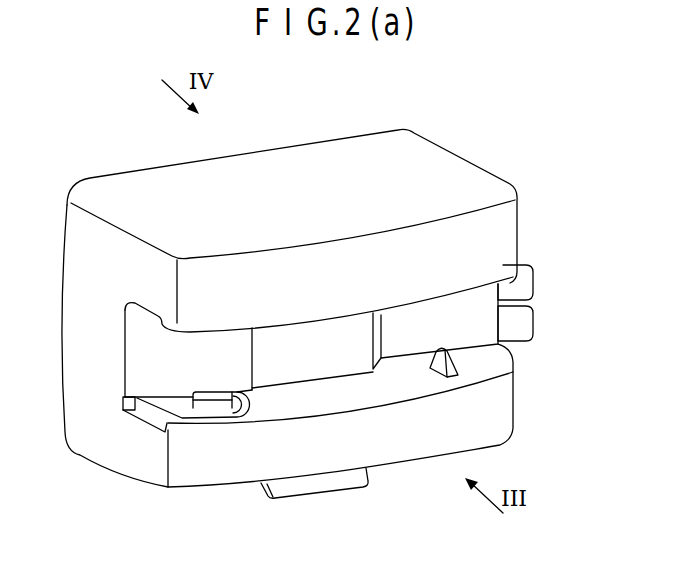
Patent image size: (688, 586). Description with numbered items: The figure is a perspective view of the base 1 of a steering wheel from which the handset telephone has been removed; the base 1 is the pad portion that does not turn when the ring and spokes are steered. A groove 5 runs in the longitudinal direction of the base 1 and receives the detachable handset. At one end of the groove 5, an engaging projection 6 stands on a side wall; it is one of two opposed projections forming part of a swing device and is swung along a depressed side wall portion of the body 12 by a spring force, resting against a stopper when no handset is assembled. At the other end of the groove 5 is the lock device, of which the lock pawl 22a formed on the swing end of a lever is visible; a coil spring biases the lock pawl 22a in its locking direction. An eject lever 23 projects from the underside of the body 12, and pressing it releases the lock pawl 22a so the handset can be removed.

The base 1 is at (324, 163).
The groove 5 is at (140, 370).
The engaging projection 6 is at (215, 395).
The body 12 is at (293, 298).
The lock pawl 22a is at (453, 360).
The eject lever 23 is at (345, 491).